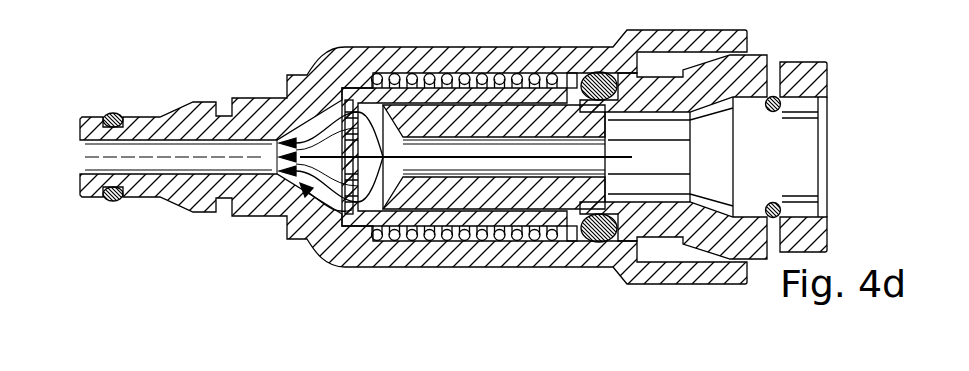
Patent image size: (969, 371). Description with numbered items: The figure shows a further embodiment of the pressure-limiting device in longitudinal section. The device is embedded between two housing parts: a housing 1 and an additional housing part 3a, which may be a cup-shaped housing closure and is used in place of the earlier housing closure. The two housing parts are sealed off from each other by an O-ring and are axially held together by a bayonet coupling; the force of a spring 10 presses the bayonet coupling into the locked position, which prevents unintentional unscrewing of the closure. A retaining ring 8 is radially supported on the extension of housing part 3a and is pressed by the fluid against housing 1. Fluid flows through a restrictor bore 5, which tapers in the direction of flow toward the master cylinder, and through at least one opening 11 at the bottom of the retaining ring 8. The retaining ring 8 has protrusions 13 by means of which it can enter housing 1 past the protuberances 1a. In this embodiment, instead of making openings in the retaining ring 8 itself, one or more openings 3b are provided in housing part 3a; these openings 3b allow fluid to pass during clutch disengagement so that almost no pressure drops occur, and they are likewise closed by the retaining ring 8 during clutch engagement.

The housing 1 is at (257, 110).
The protuberances 1a is at (367, 88).
The housing part 3a is at (807, 63).
The openings 3b is at (560, 157).
The restrictor bore 5 is at (286, 213).
The retaining ring 8 is at (507, 98).
The spring 10 is at (410, 82).
The openings 11 is at (340, 118).
The protrusions 13 is at (360, 243).